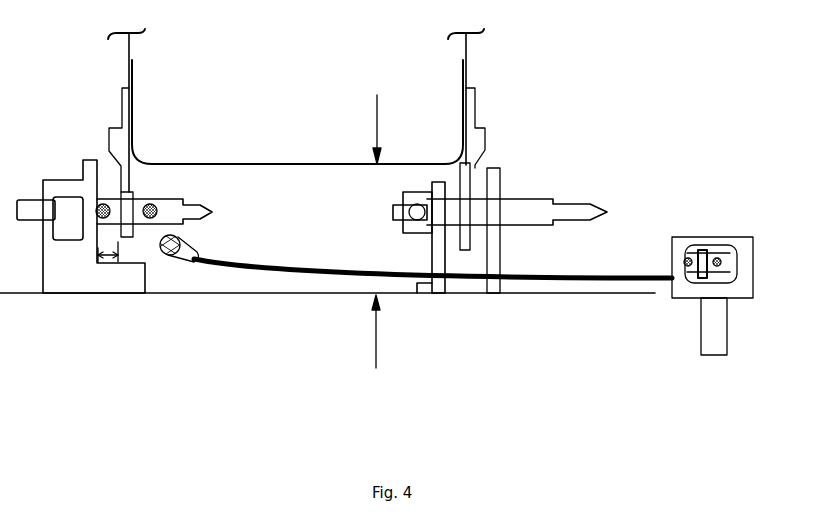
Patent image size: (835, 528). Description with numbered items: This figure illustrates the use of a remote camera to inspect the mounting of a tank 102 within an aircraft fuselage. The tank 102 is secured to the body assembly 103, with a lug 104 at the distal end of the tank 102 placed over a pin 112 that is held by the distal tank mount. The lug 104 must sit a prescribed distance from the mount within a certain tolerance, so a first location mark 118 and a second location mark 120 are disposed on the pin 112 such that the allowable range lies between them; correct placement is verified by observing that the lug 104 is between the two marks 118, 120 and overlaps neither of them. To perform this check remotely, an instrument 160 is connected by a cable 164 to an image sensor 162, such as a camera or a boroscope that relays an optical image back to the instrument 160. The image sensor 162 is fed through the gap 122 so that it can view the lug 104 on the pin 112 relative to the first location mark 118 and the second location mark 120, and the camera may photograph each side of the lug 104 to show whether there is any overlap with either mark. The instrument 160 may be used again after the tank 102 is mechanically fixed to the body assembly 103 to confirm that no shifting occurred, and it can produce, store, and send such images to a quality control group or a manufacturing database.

The tank 102 is at (233, 163).
The body assembly 103 is at (342, 293).
The lug 104 is at (120, 92).
The pin 112 is at (195, 214).
The first location mark 118 is at (152, 197).
The second location mark 120 is at (105, 200).
The gap 122 is at (378, 338).
The instrument 160 is at (755, 260).
The image sensor 162 is at (172, 258).
The cable 164 is at (250, 276).